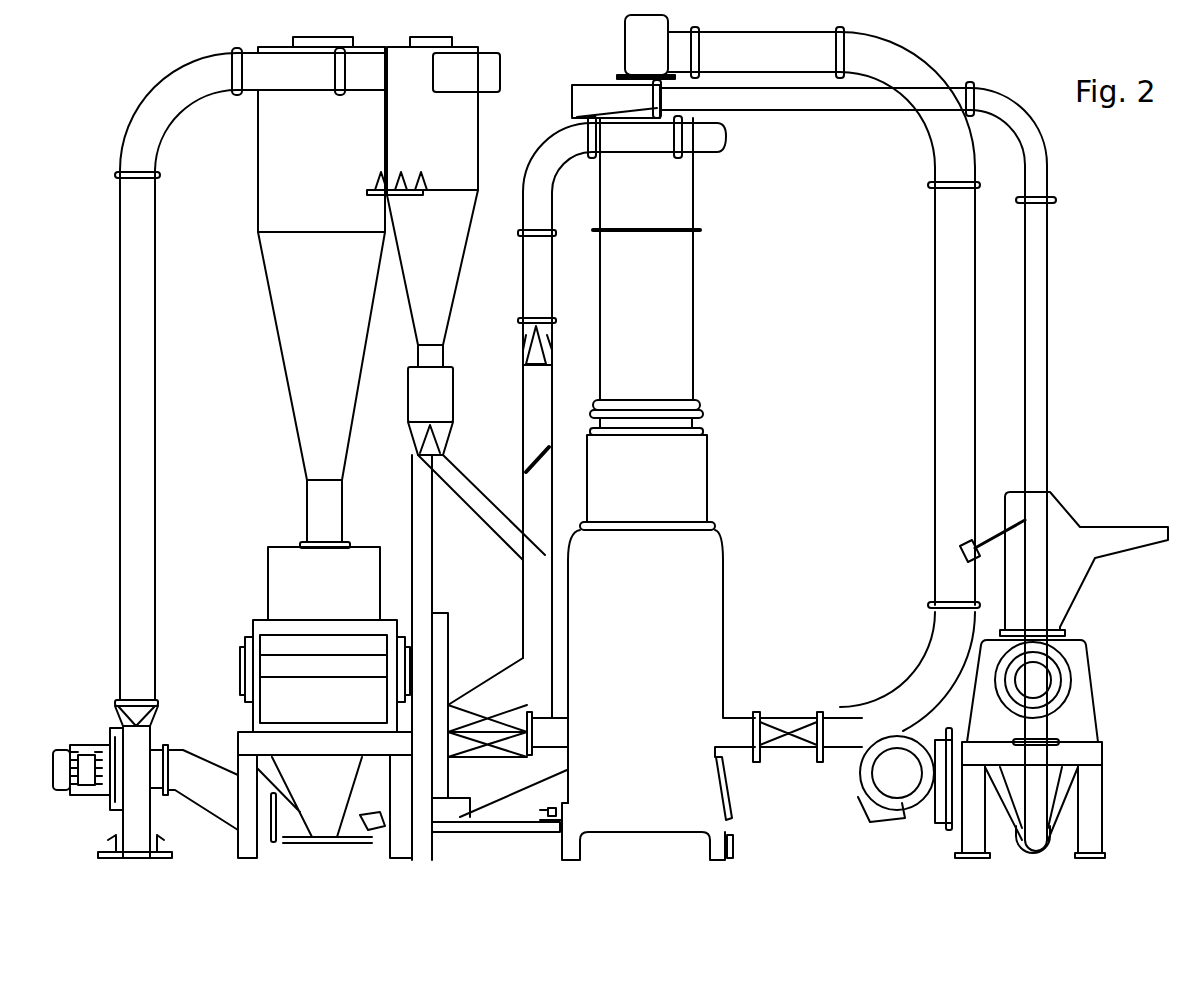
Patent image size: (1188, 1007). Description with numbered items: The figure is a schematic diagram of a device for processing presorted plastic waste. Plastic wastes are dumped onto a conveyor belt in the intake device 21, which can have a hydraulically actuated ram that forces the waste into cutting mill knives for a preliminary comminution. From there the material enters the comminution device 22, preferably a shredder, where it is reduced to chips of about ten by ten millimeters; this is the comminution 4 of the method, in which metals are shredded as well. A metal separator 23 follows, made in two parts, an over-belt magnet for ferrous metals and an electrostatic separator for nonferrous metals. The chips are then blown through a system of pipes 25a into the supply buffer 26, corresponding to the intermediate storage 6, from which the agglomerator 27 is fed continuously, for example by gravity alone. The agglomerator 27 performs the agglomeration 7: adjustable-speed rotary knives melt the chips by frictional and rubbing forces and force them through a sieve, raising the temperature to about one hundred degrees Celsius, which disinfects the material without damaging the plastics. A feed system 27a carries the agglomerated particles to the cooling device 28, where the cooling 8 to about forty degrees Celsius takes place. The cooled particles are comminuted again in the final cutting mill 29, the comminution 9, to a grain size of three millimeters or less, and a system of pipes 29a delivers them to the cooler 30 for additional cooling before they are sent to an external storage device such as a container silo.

The comminution 4 is at (671, 260).
The supply buffer storage 6 is at (294, 258).
The agglomeration 7 is at (323, 714).
The cooling 8 is at (436, 246).
The final comminution 9 is at (521, 650).
The intake device 21 is at (1115, 537).
The comminution device 22 is at (1077, 660).
The metal separator 23 is at (1050, 802).
The system of pipes 25a is at (1048, 385).
The supply buffer 26 is at (683, 320).
The agglomerator 27 is at (712, 598).
The feed system 27a is at (118, 390).
The cooling device 28 is at (270, 202).
The final cutting mill 29 is at (272, 560).
The system of pipes 29a is at (413, 503).
The cooler 30 is at (447, 297).